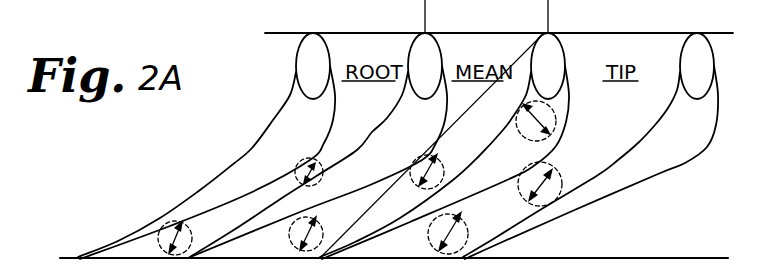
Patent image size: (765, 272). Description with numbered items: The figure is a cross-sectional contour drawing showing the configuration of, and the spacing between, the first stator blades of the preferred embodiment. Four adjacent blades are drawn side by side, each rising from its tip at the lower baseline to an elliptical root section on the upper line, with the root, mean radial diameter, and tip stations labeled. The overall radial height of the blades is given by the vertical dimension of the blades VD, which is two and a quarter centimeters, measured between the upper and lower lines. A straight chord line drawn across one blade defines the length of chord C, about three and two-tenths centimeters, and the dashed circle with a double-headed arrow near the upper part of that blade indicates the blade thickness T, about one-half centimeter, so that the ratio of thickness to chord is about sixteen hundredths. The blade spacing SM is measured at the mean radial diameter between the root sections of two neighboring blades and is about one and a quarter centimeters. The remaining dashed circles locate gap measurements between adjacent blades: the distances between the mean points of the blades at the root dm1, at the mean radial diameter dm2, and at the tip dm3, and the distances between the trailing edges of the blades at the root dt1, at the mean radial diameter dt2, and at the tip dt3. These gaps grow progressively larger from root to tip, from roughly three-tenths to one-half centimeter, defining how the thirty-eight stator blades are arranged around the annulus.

The length of chord C is at (430, 147).
The blade spacing at the mean radial diameter SM is at (428, 14).
The vertical dimension of the blades VD is at (728, 36).
The blade thickness T is at (556, 122).
The distance between the mean points of the blades at the root dm1 is at (295, 172).
The distance between the mean points of the blades at the mean radial diameter dm2 is at (418, 166).
The distance between the mean points of the blades at the tip dm3 is at (562, 188).
The distance between the trailing edges of the blades at the root dt1 is at (184, 254).
The distance between the trailing edges of the blades at the mean radial diameter dt2 is at (293, 227).
The distance between the trailing edges of the blades at the tip dt3 is at (468, 236).